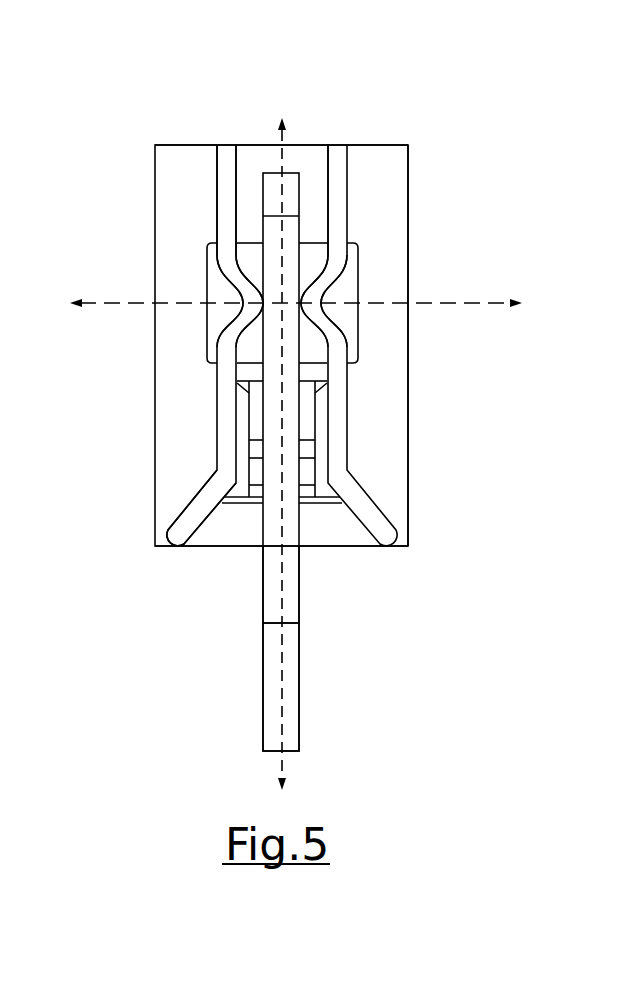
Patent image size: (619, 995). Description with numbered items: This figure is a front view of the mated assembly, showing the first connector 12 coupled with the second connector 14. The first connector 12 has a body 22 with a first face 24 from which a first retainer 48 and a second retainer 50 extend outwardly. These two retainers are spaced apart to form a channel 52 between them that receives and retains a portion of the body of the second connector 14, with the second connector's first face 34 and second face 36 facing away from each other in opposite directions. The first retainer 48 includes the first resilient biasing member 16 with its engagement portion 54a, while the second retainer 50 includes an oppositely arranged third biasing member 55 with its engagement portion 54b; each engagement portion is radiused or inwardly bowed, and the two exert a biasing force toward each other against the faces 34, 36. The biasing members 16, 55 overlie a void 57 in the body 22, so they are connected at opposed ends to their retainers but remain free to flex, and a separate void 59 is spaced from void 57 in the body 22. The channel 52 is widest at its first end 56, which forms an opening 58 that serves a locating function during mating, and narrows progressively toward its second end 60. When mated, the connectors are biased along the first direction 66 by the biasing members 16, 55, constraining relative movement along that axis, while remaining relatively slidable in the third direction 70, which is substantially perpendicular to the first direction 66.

The first connector 12 is at (156, 224).
The second connector 14 is at (299, 643).
The first resilient biasing member 16 is at (215, 327).
The body 22 is at (408, 406).
The first face 24 is at (190, 170).
The first face 34 is at (263, 600).
The second face 36 is at (299, 583).
The first retainer 48 is at (227, 193).
The second retainer 50 is at (337, 178).
The channel 52 is at (314, 157).
The engagement portion 54a is at (245, 285).
The engagement portion 54b is at (313, 285).
The third biasing member 55 is at (350, 287).
The first end 56 is at (418, 535).
The void 57 is at (353, 319).
The opening 58 is at (195, 528).
The void 59 is at (320, 428).
The second end 60 is at (362, 136).
The first direction 66 is at (475, 302).
The third direction 70 is at (282, 710).